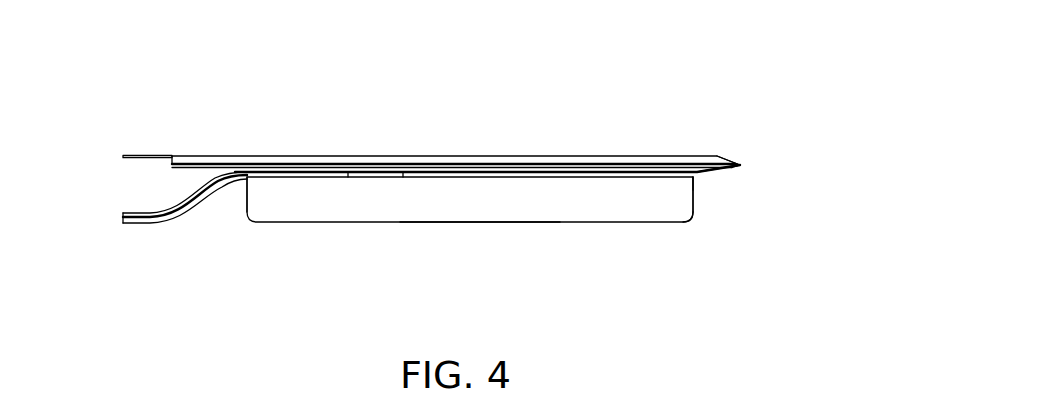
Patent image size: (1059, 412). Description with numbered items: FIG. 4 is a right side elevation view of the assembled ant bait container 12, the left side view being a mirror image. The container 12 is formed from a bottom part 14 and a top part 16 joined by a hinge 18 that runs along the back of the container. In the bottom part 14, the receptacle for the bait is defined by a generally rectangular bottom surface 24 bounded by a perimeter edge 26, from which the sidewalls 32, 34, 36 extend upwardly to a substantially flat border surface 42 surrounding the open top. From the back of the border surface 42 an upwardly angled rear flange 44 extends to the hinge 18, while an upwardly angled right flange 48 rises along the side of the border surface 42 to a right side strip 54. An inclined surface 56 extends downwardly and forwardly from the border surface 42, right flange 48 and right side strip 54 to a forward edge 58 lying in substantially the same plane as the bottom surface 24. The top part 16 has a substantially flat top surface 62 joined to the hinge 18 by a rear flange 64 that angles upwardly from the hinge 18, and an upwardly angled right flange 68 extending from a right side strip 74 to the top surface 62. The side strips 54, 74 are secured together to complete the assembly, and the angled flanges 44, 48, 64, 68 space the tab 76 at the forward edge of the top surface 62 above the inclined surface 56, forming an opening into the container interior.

The container 12 is at (718, 92).
The bottom part 14 is at (308, 223).
The top part 16 is at (373, 155).
The hinge 18 is at (740, 165).
The bottom surface 24 is at (470, 222).
The perimeter edge 26 is at (692, 220).
The sidewall 32 is at (700, 180).
The sidewall 34 is at (603, 210).
The sidewall 36 is at (243, 208).
The border surface 42 is at (710, 175).
The rear flange 44 is at (723, 168).
The right flange 48 is at (348, 171).
The right side strip 54 is at (403, 171).
The inclined surface 56 is at (157, 202).
The forward edge 58 is at (124, 215).
The top surface 62 is at (275, 156).
The rear flange 64 is at (727, 155).
The right flange 68 is at (568, 155).
The right side strip 74 is at (490, 163).
The tab 76 is at (148, 156).